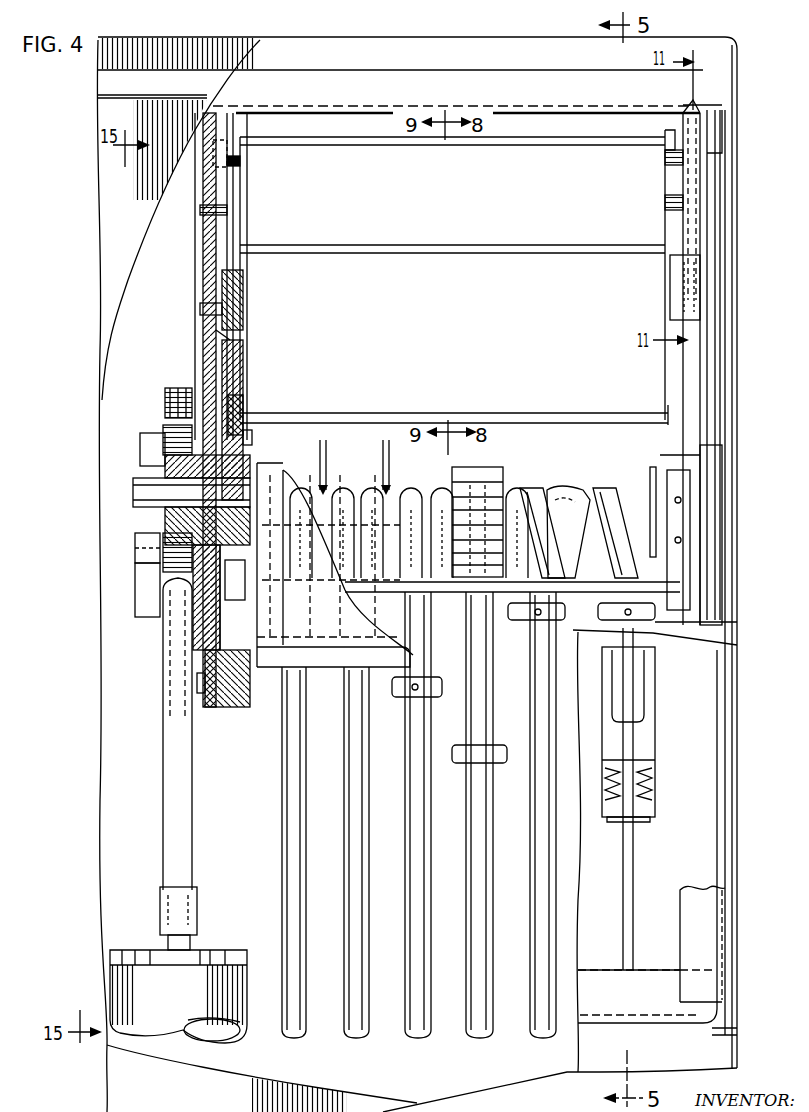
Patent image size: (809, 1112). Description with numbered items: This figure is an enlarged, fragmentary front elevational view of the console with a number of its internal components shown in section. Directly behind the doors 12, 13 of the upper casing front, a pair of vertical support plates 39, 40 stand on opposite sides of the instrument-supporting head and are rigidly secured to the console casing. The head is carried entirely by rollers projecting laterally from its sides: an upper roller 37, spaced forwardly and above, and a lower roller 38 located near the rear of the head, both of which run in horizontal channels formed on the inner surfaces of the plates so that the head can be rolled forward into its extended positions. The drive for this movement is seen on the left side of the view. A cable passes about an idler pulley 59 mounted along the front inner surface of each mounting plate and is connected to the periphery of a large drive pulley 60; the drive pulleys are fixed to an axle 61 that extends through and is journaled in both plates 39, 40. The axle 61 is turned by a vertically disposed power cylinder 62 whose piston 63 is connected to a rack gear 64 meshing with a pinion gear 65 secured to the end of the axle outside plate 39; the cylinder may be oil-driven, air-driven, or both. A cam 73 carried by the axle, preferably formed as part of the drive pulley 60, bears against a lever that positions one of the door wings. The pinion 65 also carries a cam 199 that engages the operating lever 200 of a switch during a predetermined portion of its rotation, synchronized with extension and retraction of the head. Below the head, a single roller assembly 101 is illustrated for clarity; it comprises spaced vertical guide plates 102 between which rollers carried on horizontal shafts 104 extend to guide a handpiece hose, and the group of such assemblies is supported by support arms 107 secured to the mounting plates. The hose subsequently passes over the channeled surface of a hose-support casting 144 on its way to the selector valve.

The door 12 is at (355, 160).
The door 13 is at (358, 260).
The upper roller 37 is at (232, 138).
The lower roller 38 is at (213, 215).
The vertical support plate 39 is at (208, 237).
The vertical support plate 40 is at (702, 158).
The idler pulley 59 is at (238, 286).
The drive pulley 60 is at (240, 367).
The axle 61 is at (142, 490).
The power cylinder 62 is at (248, 991).
The piston 63 is at (196, 940).
The rack gear 64 is at (164, 410).
The pinion gear 65 is at (165, 437).
The cam 73 is at (228, 400).
The roller assembly 101 is at (513, 482).
The vertical guide plate 102 is at (505, 465).
The horizontal shaft 104 is at (493, 462).
The support arm 107 is at (245, 682).
The hose-support casting 144 is at (583, 497).
The cam 199 is at (140, 452).
The operating lever 200 is at (137, 590).